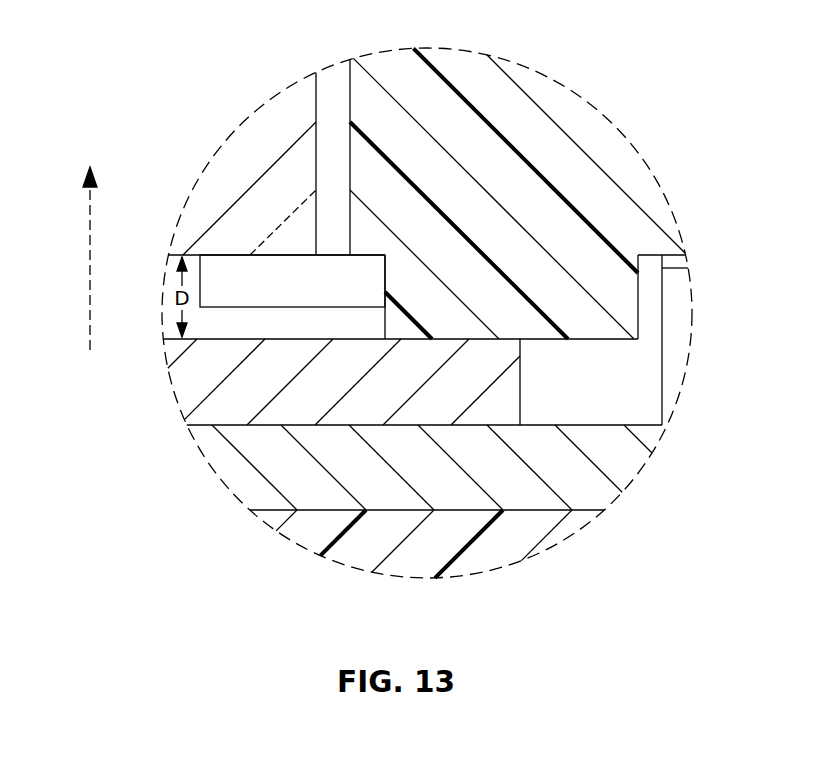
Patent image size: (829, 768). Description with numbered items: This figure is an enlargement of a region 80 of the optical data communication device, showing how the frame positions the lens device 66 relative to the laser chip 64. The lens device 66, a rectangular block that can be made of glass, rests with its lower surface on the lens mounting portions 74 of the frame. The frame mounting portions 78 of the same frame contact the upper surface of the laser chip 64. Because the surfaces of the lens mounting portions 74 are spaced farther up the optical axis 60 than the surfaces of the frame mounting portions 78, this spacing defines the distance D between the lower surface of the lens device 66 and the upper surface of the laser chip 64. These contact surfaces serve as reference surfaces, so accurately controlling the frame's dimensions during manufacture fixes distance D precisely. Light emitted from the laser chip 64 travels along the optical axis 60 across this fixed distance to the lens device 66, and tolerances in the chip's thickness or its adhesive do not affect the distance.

The optical axis 60 is at (88, 290).
The laser chip 64 is at (520, 387).
The lens device 66 is at (316, 90).
The lens mounting portions 74 is at (230, 307).
The frame mounting portions 78 is at (607, 339).
The region 80 is at (592, 110).